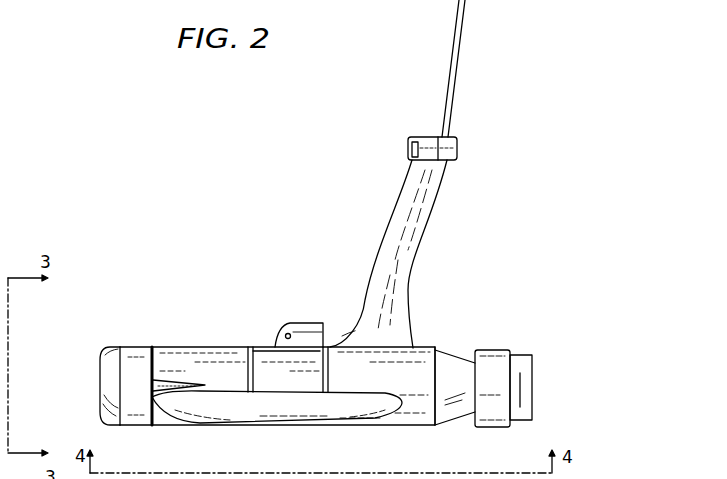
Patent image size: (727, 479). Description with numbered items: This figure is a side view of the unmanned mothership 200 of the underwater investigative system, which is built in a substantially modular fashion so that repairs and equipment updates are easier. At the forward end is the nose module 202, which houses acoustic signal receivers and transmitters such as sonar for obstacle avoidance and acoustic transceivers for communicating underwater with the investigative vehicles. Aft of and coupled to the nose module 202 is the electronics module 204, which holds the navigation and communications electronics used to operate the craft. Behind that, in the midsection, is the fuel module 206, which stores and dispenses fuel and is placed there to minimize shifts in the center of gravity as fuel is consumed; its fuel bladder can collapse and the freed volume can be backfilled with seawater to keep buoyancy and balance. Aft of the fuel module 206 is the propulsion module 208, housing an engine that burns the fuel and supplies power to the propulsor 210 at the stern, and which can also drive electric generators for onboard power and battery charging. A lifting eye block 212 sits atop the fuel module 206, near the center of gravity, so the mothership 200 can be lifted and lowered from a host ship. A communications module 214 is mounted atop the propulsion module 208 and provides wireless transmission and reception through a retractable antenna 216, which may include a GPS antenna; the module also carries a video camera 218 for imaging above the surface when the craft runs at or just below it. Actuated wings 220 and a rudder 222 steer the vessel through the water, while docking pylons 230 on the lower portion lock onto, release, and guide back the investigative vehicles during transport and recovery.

The mothership 200 is at (183, 174).
The nose module 202 is at (118, 346).
The electronics module 204 is at (210, 346).
The fuel module 206 is at (268, 346).
The propulsion module 208 is at (430, 347).
The propulsor 210 is at (490, 349).
The lifting eye block 212 is at (288, 333).
The communications module 214 is at (393, 220).
The antenna 216 is at (452, 88).
The video camera 218 is at (410, 150).
The actuated wings 220 is at (167, 379).
The rudder 222 is at (530, 355).
The docking pylons 230 is at (275, 418).